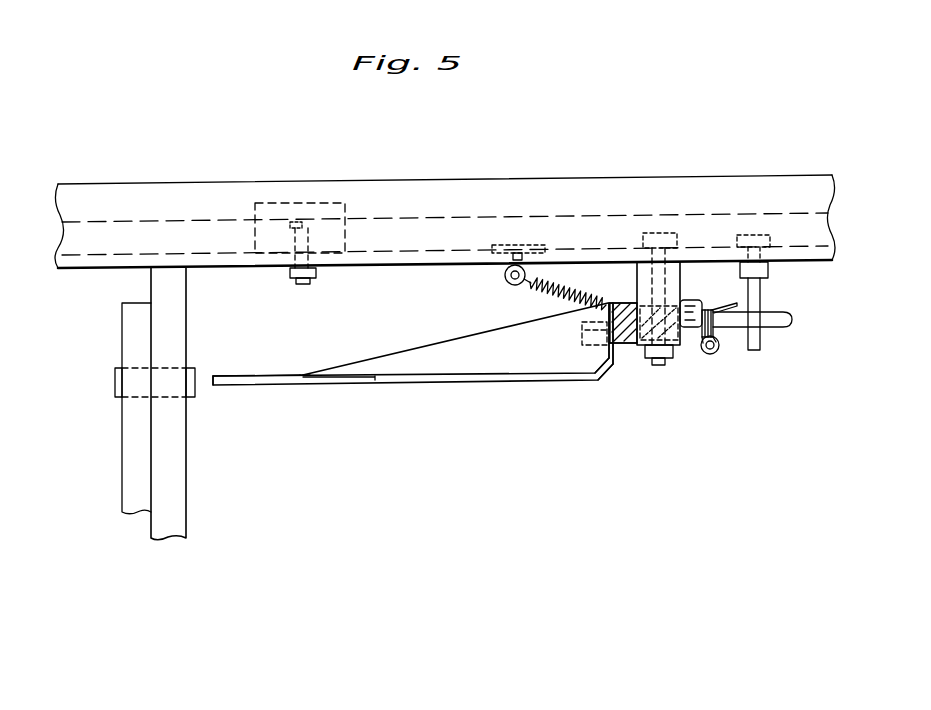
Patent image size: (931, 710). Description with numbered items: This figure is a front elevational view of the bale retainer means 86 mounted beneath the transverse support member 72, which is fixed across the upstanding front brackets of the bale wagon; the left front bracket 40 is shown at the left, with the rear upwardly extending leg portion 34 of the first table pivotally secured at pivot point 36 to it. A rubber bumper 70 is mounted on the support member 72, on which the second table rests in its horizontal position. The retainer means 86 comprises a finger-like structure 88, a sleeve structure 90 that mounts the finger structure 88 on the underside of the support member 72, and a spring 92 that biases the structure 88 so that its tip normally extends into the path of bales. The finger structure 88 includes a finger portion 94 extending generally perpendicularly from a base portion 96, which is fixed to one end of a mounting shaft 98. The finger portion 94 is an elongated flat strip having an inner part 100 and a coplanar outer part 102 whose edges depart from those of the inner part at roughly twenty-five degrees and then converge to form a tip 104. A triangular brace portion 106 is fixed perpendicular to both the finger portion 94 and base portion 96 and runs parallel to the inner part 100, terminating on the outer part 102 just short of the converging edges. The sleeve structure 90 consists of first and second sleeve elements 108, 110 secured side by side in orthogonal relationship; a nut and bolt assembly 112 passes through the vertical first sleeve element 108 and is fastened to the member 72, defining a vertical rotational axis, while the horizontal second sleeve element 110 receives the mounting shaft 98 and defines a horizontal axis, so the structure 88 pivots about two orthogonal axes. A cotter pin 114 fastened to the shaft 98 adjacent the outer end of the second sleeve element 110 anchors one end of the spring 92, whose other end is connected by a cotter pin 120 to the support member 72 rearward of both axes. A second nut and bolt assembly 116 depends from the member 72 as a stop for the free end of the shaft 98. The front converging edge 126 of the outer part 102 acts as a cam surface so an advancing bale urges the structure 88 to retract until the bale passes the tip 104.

The rear upwardly extending leg portion 34 is at (122, 336).
The pivot point 36 is at (115, 385).
The left front bracket 40 is at (187, 502).
The rubber bumper 70 is at (337, 203).
The transverse support member 72 is at (553, 178).
The bale retainer means 86 is at (616, 388).
The finger-like structure 88 is at (530, 386).
The sleeve structure 90 is at (686, 276).
The spring 92 is at (558, 302).
The finger portion 94 is at (305, 382).
The base portion 96 is at (612, 300).
The mounting shaft 98 is at (792, 318).
The inner part 100 is at (432, 387).
The outer part 102 is at (357, 383).
The tip 104 is at (220, 390).
The brace portion 106 is at (447, 339).
The first sleeve element 108 is at (687, 347).
The second sleeve element 110 is at (627, 346).
The nut and bolt assembly 112 is at (680, 358).
The cotter pin 114 is at (720, 351).
The second nut and bolt assembly 116 is at (762, 341).
The cotter pin 120 is at (505, 283).
The front converging edge 126 is at (277, 375).